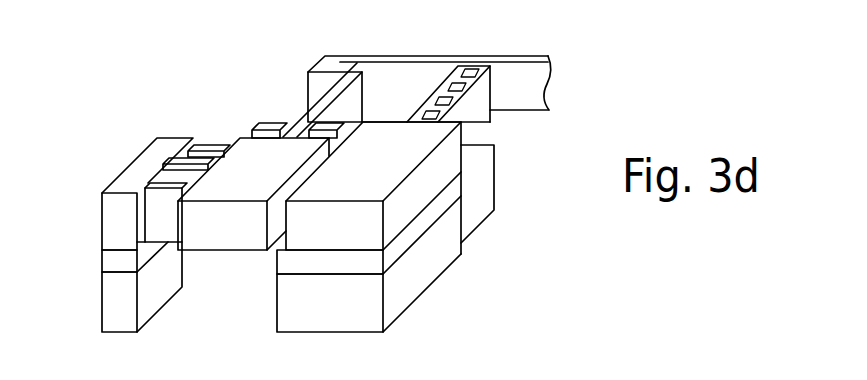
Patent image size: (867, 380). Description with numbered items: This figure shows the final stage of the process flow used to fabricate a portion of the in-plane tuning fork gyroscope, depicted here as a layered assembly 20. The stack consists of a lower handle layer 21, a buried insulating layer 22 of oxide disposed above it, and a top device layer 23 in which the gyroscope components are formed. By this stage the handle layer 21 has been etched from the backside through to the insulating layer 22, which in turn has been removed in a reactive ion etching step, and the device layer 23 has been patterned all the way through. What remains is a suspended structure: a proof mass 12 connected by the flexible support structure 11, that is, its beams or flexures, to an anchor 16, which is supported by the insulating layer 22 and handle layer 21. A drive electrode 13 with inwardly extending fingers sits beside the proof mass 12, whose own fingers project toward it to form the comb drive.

The flexible support structure 11 is at (323, 92).
The proof mass 12 is at (205, 240).
The drive electrode 13 is at (153, 150).
The anchor 16 is at (312, 239).
The assembly 20 is at (77, 124).
The handle layer 21 is at (113, 300).
The insulating layer 22 is at (113, 262).
The device layer 23 is at (113, 224).